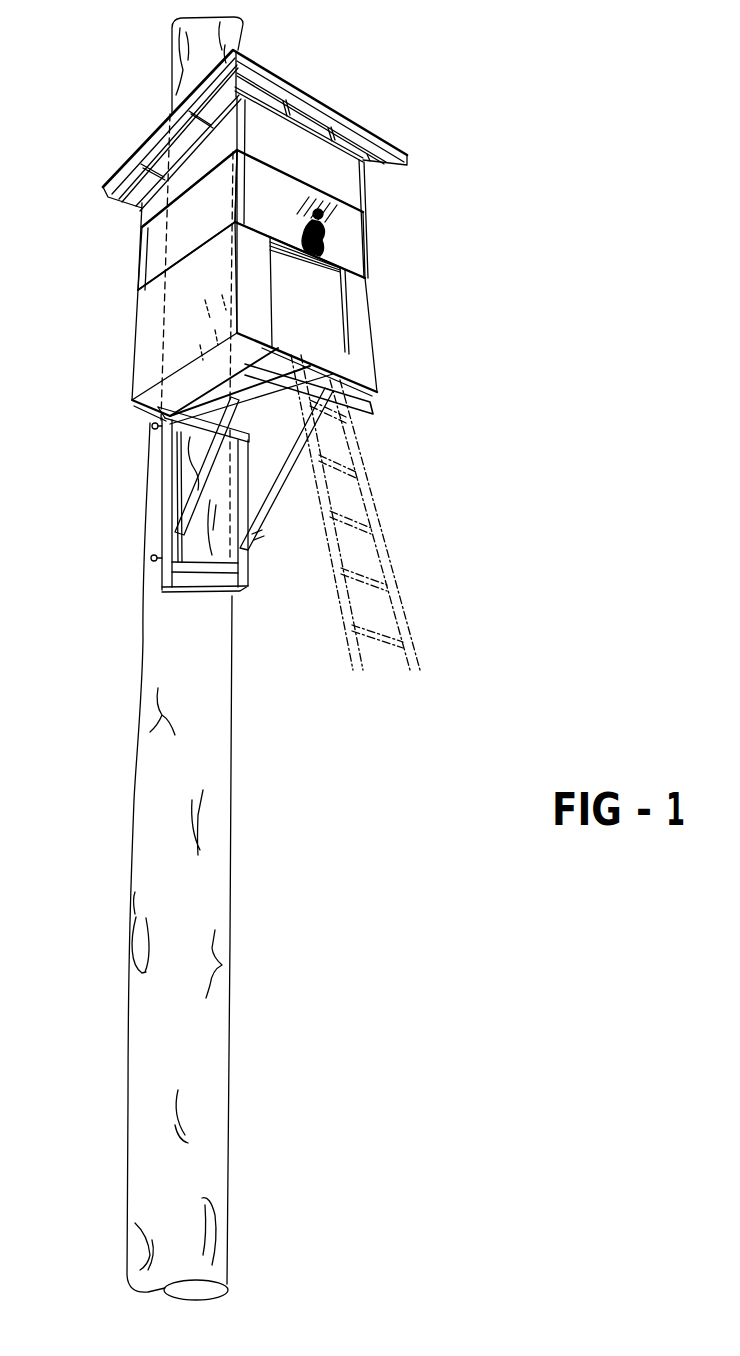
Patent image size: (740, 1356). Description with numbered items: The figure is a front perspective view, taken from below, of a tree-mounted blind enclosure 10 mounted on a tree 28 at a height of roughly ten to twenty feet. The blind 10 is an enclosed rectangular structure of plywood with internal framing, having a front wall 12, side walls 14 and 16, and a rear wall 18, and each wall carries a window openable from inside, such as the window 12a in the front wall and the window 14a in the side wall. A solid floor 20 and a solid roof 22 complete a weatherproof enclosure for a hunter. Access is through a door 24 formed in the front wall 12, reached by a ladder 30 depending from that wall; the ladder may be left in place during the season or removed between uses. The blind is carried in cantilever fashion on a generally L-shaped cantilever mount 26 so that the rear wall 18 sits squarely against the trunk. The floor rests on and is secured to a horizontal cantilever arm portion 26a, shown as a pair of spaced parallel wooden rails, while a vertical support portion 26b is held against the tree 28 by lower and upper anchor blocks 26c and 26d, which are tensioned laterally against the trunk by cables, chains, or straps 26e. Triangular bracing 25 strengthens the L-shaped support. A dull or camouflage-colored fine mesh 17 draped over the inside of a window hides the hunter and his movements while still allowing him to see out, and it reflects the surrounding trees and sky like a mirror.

The tree-mounted blind enclosure 10 is at (479, 203).
The front wall 12 is at (360, 318).
The window 12a is at (348, 235).
The side wall 14 is at (145, 333).
The window 14a is at (180, 240).
The side wall 16 is at (368, 402).
The mesh netting 17 is at (350, 250).
The rear wall 18 is at (145, 404).
The floor 20 is at (158, 413).
The roof 22 is at (308, 93).
The door 24 is at (323, 296).
The triangular bracing 25 is at (262, 536).
The cantilever mount 26 is at (274, 582).
The horizontal cantilever arm portion 26a is at (286, 472).
The vertical support portion 26b is at (167, 508).
The lower anchor block 26c is at (218, 592).
The upper anchor block 26d is at (178, 445).
The straps 26e is at (155, 430).
The tree 28 is at (200, 62).
The ladder 30 is at (388, 557).